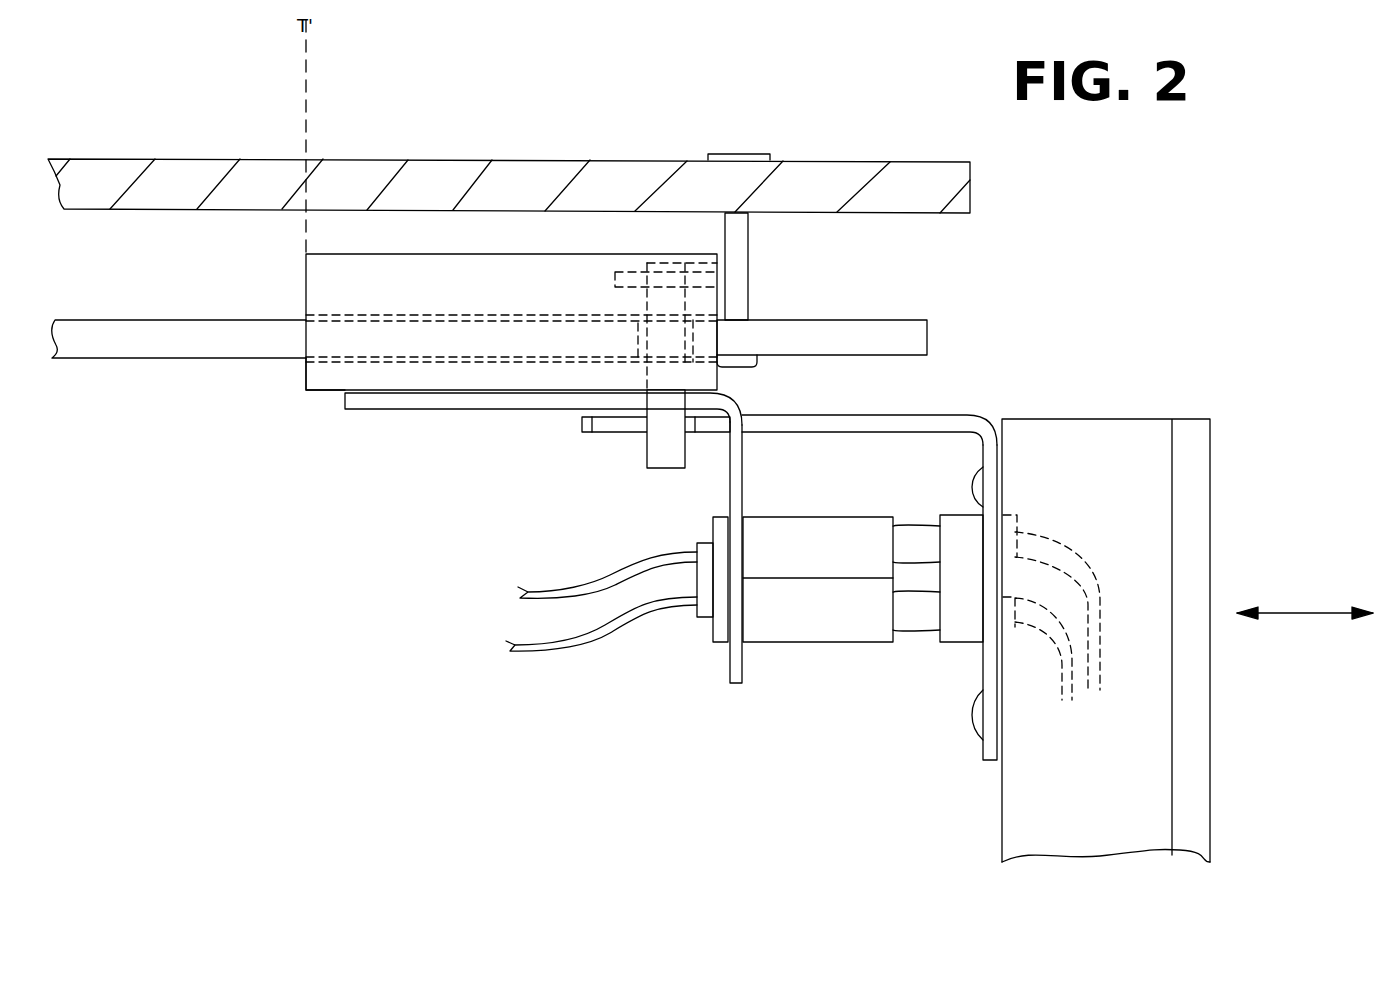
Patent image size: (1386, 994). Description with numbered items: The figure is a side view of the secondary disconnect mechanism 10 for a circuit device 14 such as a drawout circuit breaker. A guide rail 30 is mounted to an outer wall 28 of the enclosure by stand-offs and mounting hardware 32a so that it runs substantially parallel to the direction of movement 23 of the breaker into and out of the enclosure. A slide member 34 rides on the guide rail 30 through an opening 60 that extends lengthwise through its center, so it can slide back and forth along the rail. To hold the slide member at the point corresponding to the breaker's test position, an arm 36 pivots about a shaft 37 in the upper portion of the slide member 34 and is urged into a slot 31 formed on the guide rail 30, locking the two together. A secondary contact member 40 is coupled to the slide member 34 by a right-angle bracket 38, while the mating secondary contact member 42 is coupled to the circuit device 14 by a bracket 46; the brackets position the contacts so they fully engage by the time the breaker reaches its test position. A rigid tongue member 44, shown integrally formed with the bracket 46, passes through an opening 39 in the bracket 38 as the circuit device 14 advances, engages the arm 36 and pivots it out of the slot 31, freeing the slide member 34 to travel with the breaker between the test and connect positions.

The secondary disconnect mechanism 10 is at (437, 665).
The circuit device 14 is at (1212, 485).
The direction of movement 23 is at (1290, 613).
The outer wall 28 is at (223, 168).
The guide rail 30 is at (82, 360).
The slot 31 is at (630, 325).
The stand-off and mounting hardware 32a is at (748, 268).
The slide member 34 is at (306, 285).
The arm 36 is at (645, 457).
The shaft 37 is at (622, 272).
The right-angle bracket 38 is at (735, 685).
The opening 39 is at (739, 410).
The secondary contact member 40 is at (822, 643).
The secondary contact member 42 is at (948, 643).
The tongue member 44 is at (806, 432).
The bracket 46 is at (985, 765).
The opening 60 is at (306, 364).